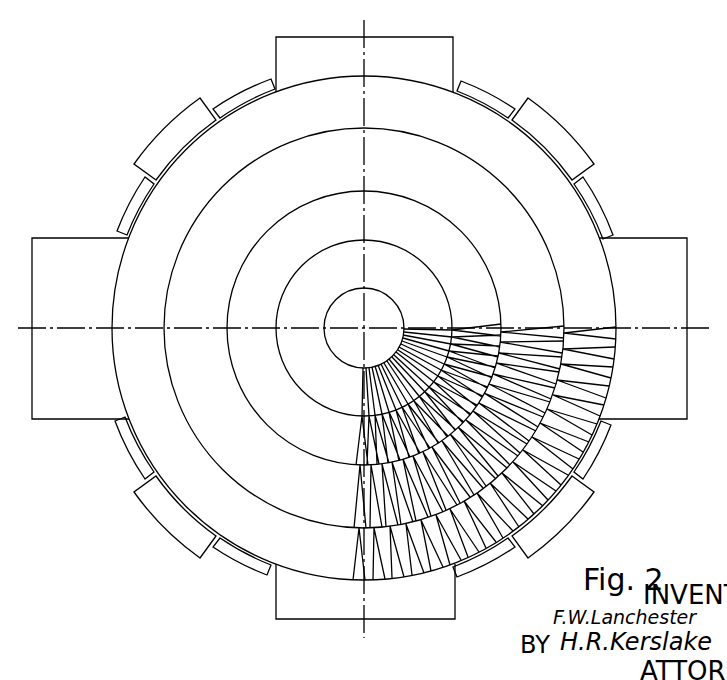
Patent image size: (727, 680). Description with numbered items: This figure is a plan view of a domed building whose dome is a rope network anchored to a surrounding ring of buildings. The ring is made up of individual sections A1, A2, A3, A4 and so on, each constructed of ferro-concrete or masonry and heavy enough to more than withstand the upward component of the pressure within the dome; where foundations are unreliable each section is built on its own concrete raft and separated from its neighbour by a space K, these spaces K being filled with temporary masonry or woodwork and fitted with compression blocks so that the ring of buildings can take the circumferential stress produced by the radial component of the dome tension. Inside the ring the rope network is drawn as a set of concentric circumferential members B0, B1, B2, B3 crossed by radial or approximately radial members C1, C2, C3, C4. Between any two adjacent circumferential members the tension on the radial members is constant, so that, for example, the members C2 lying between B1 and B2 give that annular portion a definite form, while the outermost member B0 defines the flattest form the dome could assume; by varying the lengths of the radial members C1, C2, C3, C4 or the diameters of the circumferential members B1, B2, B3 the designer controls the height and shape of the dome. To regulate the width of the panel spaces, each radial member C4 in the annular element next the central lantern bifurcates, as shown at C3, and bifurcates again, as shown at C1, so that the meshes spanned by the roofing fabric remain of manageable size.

The space between building sections K is at (600, 237).
The building section A1 is at (650, 242).
The building section A2 is at (568, 506).
The building section A3 is at (590, 447).
The building section A4 is at (285, 602).
The outermost circumferential member B0 is at (613, 283).
The circumferential member B1 is at (550, 259).
The circumferential member B2 is at (492, 276).
The circumferential member B3 is at (437, 283).
The radial member C1 is at (352, 552).
The radial member C2 is at (435, 427).
The radial member C3 is at (362, 430).
The radial member C4 is at (360, 383).